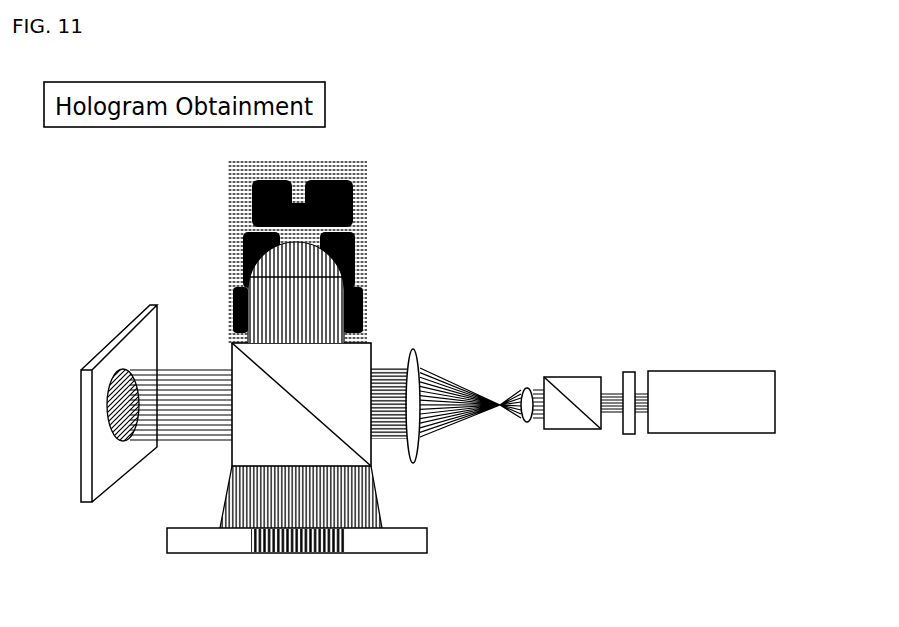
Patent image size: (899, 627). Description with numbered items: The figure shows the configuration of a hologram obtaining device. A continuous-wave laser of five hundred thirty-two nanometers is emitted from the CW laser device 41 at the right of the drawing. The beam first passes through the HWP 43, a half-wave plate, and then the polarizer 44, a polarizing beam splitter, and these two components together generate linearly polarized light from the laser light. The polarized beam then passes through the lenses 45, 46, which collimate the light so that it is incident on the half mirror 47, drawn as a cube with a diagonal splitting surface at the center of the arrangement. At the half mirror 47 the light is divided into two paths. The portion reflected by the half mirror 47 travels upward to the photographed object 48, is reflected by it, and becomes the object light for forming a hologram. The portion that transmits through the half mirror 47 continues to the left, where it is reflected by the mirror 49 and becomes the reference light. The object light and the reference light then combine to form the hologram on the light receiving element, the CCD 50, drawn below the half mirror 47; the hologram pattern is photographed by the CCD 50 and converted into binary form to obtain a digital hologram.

The CW laser device 41 is at (729, 371).
The HWP 43 is at (630, 436).
The polarizer 44 is at (590, 432).
The lens 45 is at (523, 388).
The lens 46 is at (413, 349).
The half mirror 47 is at (231, 447).
The photographed object 48 is at (346, 251).
The mirror 49 is at (104, 394).
The CCD 50 is at (380, 555).